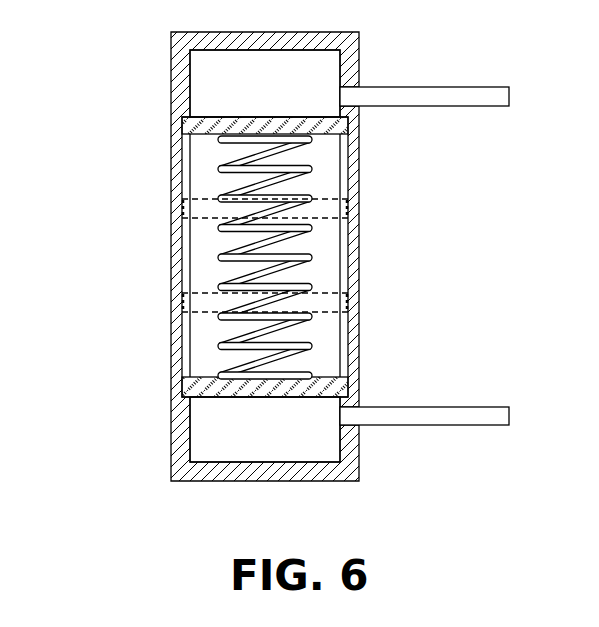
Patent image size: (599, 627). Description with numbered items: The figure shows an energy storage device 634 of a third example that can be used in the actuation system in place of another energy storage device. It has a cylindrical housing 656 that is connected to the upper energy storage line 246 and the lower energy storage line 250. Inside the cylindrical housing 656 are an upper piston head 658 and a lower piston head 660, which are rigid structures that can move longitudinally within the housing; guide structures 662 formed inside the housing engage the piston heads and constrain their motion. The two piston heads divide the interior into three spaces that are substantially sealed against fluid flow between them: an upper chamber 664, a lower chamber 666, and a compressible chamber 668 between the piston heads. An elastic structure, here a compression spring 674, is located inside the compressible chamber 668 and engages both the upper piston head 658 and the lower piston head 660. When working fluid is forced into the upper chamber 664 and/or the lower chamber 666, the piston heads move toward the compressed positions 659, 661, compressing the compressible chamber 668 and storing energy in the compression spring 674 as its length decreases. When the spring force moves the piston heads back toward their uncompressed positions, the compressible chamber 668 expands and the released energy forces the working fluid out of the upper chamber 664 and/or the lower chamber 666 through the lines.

The energy storage device 634 is at (294, 242).
The cylindrical housing 656 is at (320, 32).
The upper chamber 664 is at (285, 92).
The lower chamber 666 is at (285, 442).
The upper energy storage line 246 is at (473, 87).
The lower energy storage line 250 is at (473, 407).
The upper piston head 658 is at (182, 122).
The lower piston head 660 is at (184, 384).
The guide structures 662 is at (187, 254).
The compressed position 659 is at (184, 208).
The compressed position 661 is at (184, 302).
The compressible chamber 668 is at (344, 257).
The compression spring 674 is at (308, 341).